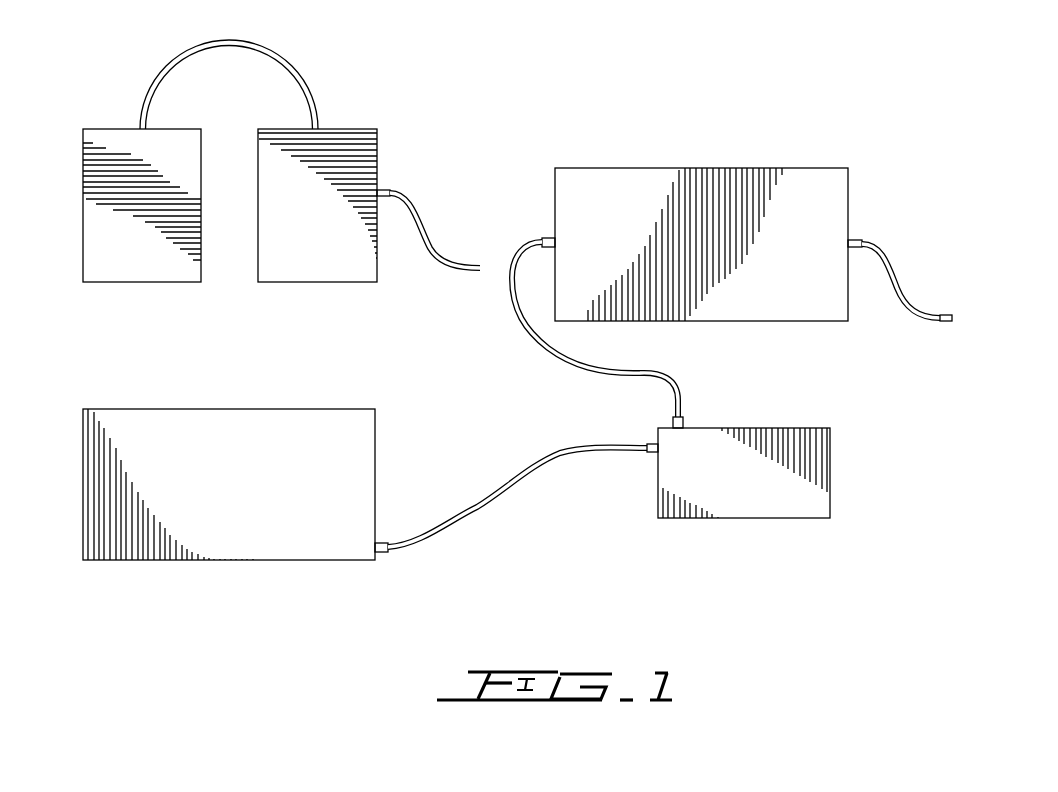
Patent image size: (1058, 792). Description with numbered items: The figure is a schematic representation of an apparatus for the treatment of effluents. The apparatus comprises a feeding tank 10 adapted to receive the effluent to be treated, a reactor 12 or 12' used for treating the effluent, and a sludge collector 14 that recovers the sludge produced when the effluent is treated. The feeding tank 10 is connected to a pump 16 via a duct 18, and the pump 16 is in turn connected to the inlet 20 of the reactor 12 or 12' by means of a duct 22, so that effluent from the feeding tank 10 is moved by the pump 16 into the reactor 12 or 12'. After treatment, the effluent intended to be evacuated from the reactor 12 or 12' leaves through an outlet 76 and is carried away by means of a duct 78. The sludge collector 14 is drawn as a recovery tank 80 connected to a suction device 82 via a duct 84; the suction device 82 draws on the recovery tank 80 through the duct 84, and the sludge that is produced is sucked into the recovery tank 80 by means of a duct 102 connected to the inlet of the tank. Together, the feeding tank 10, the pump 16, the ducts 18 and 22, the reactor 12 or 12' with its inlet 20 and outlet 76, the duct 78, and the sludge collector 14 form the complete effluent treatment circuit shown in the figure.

The feeding tank 10 is at (230, 415).
The reactor 12 is at (701, 214).
The reactor 12' is at (701, 244).
The sludge collector 14 is at (404, 113).
The pump 16 is at (765, 495).
The duct 18 is at (443, 527).
The inlet 20 is at (552, 237).
The duct 22 is at (597, 370).
The outlet 76 is at (853, 237).
The duct 78 is at (943, 323).
The recovery tank 80 is at (301, 243).
The suction device 82 is at (110, 243).
The duct 84 is at (141, 102).
The duct 102 is at (428, 247).